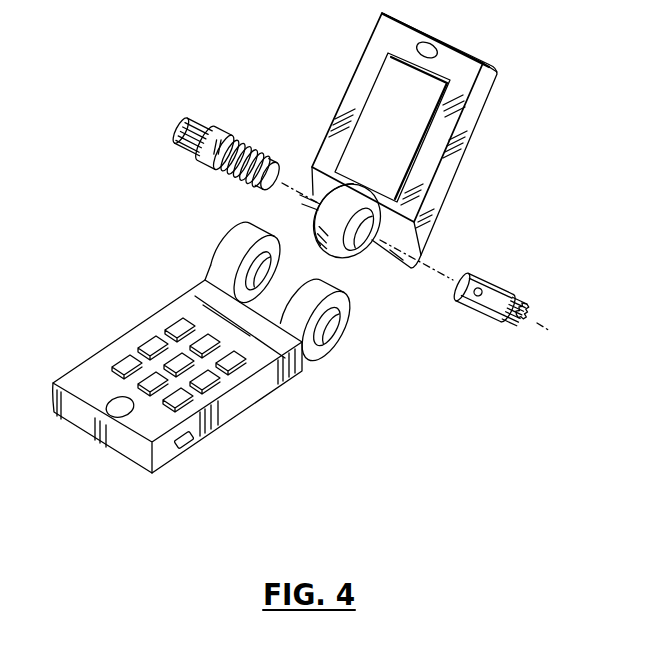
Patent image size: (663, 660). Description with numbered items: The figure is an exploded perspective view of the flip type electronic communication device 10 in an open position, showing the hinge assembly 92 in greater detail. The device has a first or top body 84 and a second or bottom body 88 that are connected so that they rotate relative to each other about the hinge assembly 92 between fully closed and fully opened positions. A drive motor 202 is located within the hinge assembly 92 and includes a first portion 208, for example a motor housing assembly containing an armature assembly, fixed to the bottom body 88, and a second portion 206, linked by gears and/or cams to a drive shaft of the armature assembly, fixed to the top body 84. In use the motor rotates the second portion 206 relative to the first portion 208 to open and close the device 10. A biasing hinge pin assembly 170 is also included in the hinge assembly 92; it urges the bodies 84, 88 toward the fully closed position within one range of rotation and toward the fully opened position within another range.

The flip type electronic communication device 10 is at (338, 62).
The top body 84 is at (467, 157).
The bottom body 88 is at (238, 402).
The hinge assembly 92 is at (358, 328).
The biasing hinge pin assembly 170 is at (235, 138).
The drive motor 202 is at (490, 270).
The second portion 206 is at (468, 302).
The first portion 208 is at (515, 297).